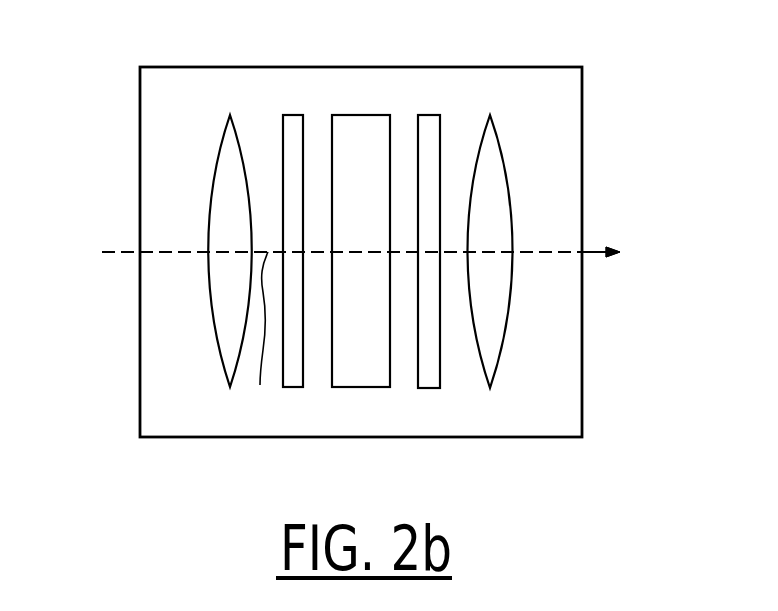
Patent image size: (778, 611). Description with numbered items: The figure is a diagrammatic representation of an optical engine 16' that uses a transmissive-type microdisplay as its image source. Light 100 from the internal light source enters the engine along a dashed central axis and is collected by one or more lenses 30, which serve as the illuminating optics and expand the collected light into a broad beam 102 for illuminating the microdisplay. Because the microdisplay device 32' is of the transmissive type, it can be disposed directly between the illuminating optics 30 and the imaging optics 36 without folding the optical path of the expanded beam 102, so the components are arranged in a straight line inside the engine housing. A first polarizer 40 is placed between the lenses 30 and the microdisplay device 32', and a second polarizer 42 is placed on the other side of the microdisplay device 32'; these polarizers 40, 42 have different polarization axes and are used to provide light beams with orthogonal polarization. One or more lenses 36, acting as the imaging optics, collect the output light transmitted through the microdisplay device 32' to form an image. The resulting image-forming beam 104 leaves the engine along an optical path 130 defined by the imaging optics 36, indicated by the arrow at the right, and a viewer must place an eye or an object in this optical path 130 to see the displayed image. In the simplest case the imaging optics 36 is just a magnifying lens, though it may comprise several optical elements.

The optical engine 16' is at (361, 223).
The light 100 is at (120, 252).
The image-forming beam 104 is at (592, 252).
The optical path 130 is at (613, 252).
The lenses 30 is at (220, 298).
The broad beam 102 is at (264, 335).
The polarizer 40 is at (292, 115).
The transmissive-type microdisplay device 32' is at (380, 202).
The polarizer 42 is at (428, 388).
The lenses 36 is at (502, 175).